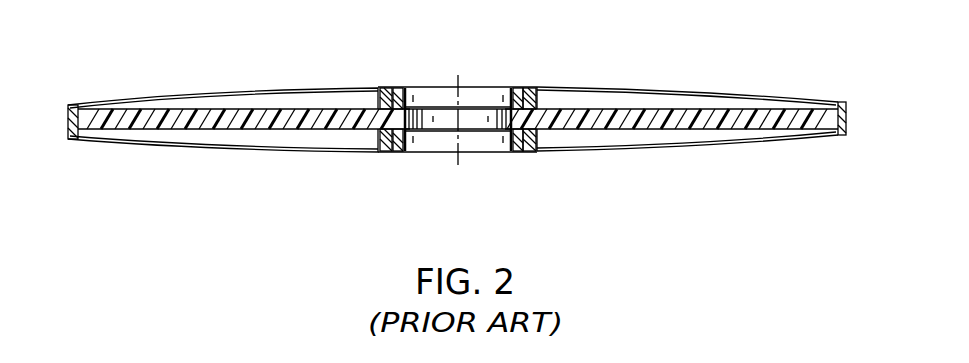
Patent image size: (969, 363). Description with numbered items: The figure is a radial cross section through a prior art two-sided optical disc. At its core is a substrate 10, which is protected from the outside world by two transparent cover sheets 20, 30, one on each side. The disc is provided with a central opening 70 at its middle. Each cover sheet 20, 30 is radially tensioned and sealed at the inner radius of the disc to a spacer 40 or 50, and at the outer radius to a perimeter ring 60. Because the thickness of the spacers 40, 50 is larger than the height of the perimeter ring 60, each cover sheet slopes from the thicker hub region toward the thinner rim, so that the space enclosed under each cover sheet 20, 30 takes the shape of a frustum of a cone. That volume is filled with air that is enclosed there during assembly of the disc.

The substrate 10 is at (575, 107).
The transparent cover sheet 20 is at (657, 93).
The transparent cover sheet 30 is at (697, 142).
The spacer 40 is at (410, 86).
The spacer 50 is at (400, 145).
The perimeter ring 60 is at (846, 117).
The central opening 70 is at (485, 112).